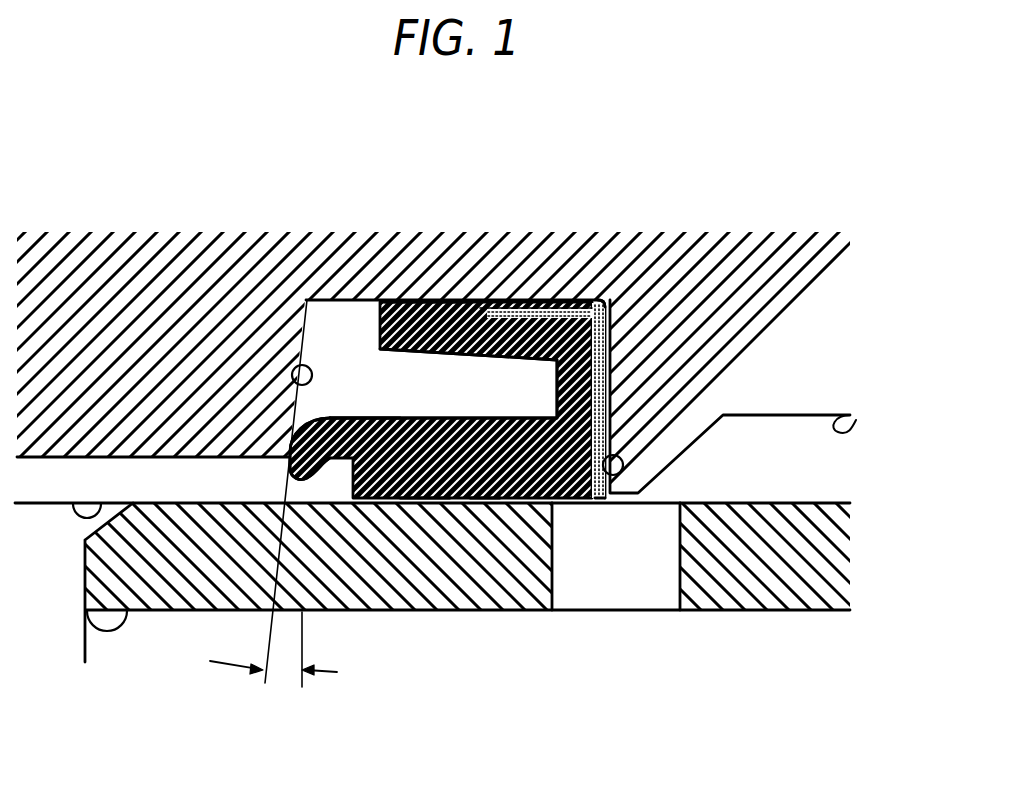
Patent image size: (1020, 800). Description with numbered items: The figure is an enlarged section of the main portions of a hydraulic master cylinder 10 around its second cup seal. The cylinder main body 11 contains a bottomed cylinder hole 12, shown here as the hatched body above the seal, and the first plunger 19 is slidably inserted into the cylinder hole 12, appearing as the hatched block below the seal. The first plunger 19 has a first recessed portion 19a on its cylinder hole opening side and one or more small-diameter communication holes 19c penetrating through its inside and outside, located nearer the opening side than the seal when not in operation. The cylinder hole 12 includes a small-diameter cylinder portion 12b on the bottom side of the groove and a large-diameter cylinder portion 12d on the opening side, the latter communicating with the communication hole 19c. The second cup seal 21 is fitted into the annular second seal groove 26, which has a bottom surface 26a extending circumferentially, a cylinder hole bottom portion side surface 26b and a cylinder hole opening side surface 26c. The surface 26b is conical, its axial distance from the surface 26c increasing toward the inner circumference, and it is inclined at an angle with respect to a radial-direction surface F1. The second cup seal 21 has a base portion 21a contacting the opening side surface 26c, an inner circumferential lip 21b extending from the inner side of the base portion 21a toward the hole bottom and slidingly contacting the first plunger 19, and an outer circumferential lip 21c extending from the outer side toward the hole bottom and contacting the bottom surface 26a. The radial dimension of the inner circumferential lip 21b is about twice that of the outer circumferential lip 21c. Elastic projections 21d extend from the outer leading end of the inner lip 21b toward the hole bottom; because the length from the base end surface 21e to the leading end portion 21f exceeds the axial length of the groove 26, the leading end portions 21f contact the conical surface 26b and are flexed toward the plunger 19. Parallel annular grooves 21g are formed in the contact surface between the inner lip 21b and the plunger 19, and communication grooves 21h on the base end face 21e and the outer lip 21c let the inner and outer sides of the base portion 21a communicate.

The hydraulic master cylinder 10 is at (673, 201).
The cylinder main body 11 is at (138, 232).
The cylinder hole 12 is at (55, 505).
The small-diameter cylinder portion 12b is at (78, 502).
The large-diameter cylinder portion 12d is at (856, 420).
The first plunger 19 is at (838, 553).
The first recessed portion 19a is at (82, 613).
The small-diameter communication hole 19c is at (635, 600).
The second cup seal 21 is at (467, 301).
The base portion 21a is at (584, 310).
The inner circumferential lip 21b is at (429, 501).
The outer circumferential lip 21c is at (413, 298).
The elastic projection 21d is at (323, 416).
The base end surface 21e is at (604, 502).
The leading end portion 21f is at (288, 467).
The annular groove 21g is at (492, 504).
The communication groove 21h is at (613, 328).
The second seal groove 26 is at (357, 303).
The bottom surface 26a is at (540, 308).
The cylinder hole bottom portion side surface 26b is at (292, 374).
The cylinder hole opening side surface 26c is at (622, 405).
The radial-direction surface F1 is at (303, 640).